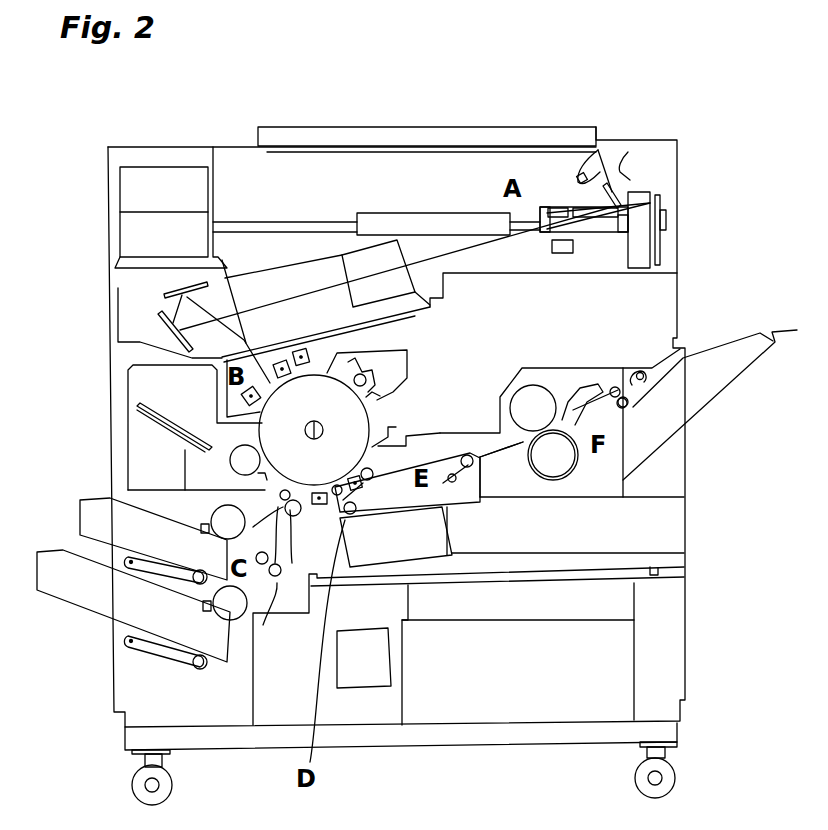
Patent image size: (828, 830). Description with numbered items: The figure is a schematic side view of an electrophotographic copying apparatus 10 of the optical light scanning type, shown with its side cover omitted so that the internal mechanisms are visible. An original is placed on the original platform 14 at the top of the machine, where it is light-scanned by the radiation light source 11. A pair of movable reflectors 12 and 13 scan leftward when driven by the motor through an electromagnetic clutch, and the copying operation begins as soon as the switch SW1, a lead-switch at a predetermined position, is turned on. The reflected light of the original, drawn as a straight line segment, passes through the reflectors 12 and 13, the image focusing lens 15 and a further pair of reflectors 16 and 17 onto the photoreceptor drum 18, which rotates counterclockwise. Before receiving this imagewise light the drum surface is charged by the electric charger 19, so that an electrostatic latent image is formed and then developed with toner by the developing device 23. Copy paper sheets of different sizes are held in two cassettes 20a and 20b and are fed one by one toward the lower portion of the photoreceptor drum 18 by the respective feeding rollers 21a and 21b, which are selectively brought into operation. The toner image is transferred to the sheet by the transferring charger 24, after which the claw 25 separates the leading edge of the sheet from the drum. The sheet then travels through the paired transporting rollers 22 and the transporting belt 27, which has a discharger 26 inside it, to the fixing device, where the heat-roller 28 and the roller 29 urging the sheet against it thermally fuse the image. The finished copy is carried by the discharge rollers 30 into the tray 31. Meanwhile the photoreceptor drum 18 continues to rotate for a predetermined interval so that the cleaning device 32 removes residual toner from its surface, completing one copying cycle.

The electrophotographic copying apparatus 10 is at (118, 96).
The radiation light source 11 is at (580, 168).
The reflector 12 is at (625, 185).
The reflector 13 is at (660, 200).
The original platform 14 is at (466, 127).
The image focusing lens 15 is at (380, 226).
The reflector 16 is at (165, 296).
The reflector 17 is at (160, 320).
The photoreceptor drum 18 is at (353, 430).
The electric charger 19 is at (284, 358).
The cassette 20a is at (95, 510).
The cassette 20b is at (65, 590).
The feeding roller 21a is at (218, 515).
The feeding roller 21b is at (230, 622).
The transporting rollers 22 is at (468, 455).
The developing device 23 is at (218, 440).
The transferring charger 24 is at (319, 505).
The claw 25 is at (375, 445).
The discharger 26 is at (363, 483).
The transporting belt 27 is at (455, 455).
The heat-roller 28 is at (542, 400).
The roller 29 is at (543, 457).
The discharge rollers 30 is at (627, 408).
The tray 31 is at (722, 358).
The cleaning device 32 is at (390, 362).
The switch SW1 is at (565, 255).